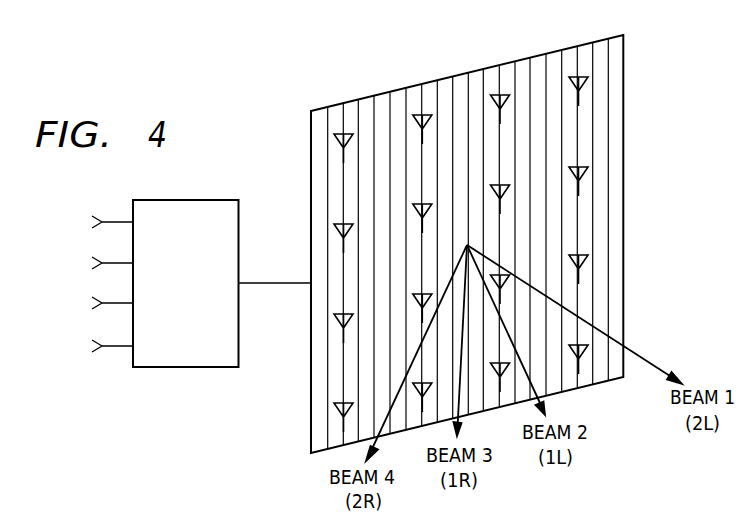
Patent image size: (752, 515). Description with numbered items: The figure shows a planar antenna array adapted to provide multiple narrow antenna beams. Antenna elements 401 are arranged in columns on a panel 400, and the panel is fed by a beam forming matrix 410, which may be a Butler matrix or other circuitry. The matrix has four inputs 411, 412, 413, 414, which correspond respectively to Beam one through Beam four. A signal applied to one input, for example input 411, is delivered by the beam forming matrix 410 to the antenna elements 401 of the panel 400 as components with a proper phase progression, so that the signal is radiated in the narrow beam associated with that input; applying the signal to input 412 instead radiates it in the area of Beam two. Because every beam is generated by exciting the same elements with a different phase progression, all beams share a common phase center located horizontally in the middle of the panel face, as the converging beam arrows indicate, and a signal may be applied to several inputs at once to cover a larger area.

The panel 400 is at (624, 165).
The antenna elements 401 is at (336, 141).
The beam forming matrix 410 is at (167, 337).
The input 411 is at (92, 222).
The input 412 is at (92, 263).
The input 413 is at (92, 303).
The input 414 is at (92, 346).